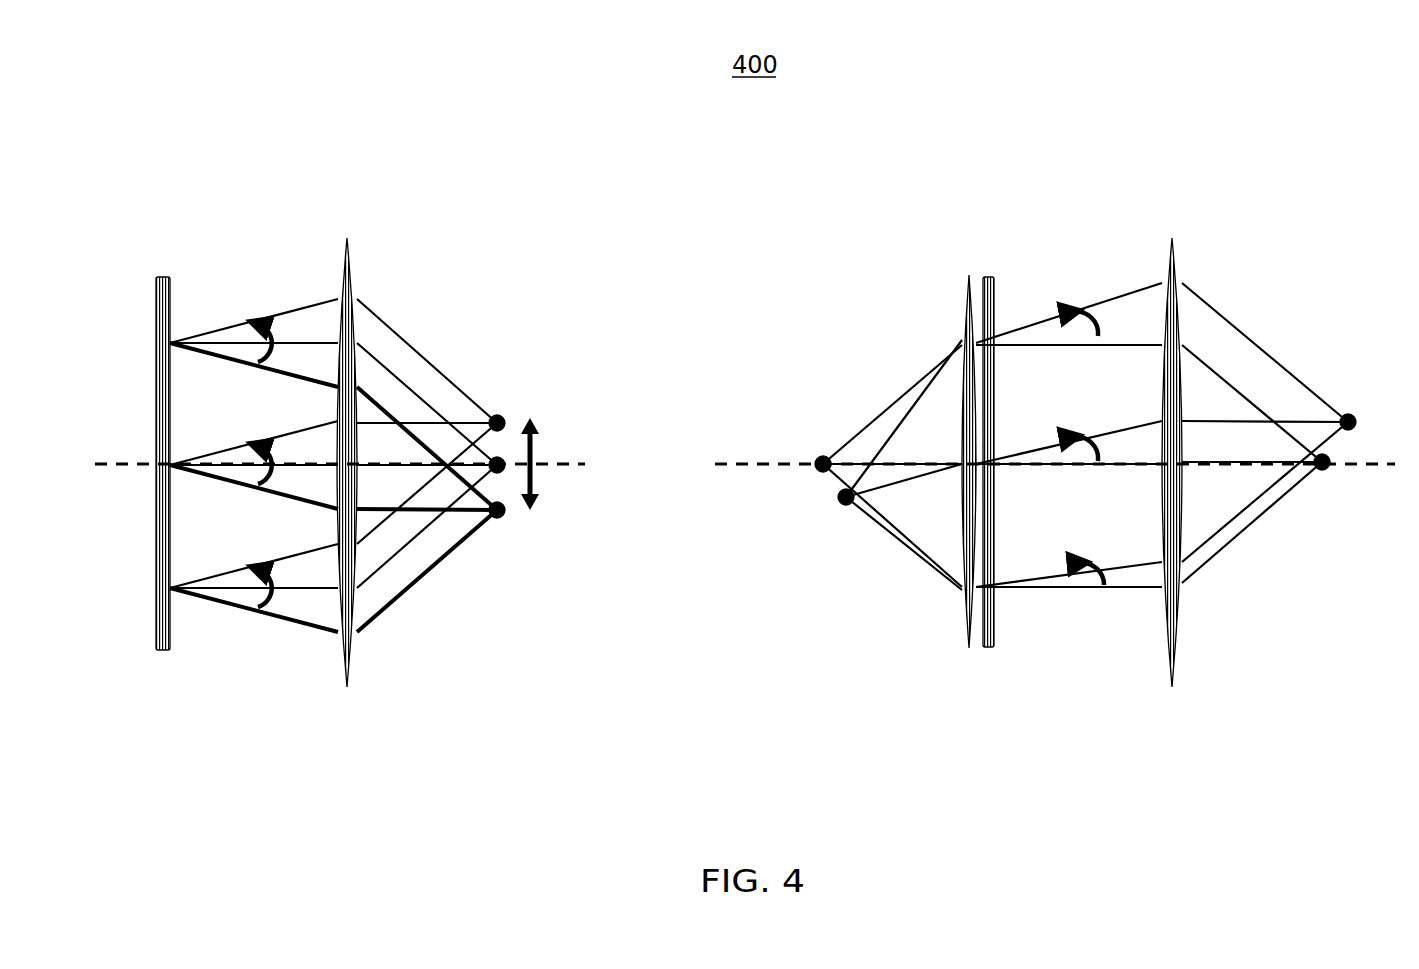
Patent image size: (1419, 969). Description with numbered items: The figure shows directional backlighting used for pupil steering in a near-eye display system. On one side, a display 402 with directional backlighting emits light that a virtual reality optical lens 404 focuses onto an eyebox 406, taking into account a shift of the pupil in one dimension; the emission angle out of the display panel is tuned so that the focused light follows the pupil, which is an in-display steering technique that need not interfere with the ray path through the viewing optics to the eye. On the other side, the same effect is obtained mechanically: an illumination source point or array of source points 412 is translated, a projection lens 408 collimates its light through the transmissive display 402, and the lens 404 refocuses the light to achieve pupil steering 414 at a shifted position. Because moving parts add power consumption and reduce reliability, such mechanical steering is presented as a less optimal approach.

The display 402 is at (166, 275).
The virtual reality optical lens 404 is at (348, 236).
The eyebox 406 is at (530, 416).
The projection lens 408 is at (968, 273).
The illumination source point or array of source points 412 is at (819, 486).
The pupil steering 414 is at (1347, 443).